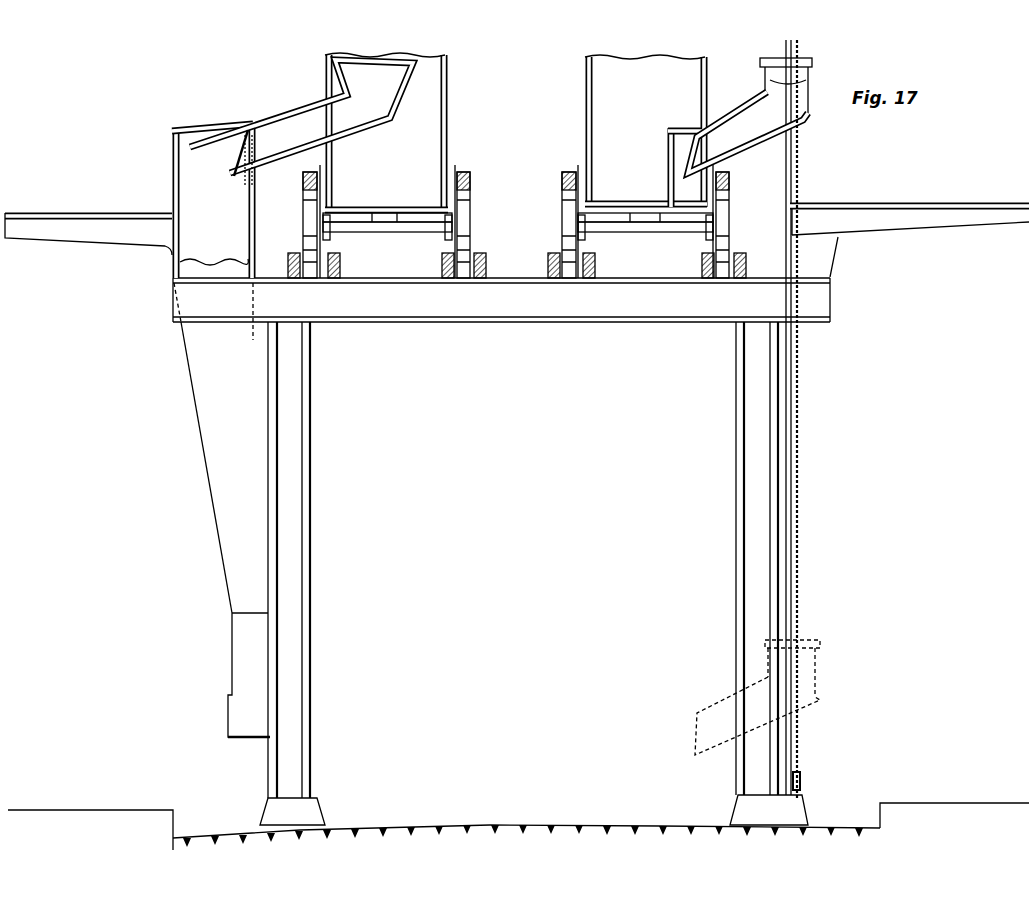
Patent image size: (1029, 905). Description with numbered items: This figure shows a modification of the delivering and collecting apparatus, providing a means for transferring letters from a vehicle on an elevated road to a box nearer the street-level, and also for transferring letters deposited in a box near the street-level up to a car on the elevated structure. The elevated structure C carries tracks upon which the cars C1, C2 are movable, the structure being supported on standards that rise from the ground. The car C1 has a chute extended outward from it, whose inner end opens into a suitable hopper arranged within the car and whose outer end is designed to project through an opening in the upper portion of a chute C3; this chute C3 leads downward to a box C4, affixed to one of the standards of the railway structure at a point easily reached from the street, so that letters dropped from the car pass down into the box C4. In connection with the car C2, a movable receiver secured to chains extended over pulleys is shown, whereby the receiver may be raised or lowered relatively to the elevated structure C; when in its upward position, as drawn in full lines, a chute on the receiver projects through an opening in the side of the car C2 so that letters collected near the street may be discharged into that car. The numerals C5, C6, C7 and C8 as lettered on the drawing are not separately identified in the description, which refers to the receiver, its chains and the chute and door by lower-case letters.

The elevated structure C is at (294, 116).
The car C1 is at (246, 176).
The car C2 is at (211, 140).
The chute C3 is at (172, 191).
The box C4 is at (810, 127).
The gate C5 is at (238, 170).
The chute C6 is at (743, 150).
The inner box C7 is at (702, 152).
The chain C8 is at (798, 375).